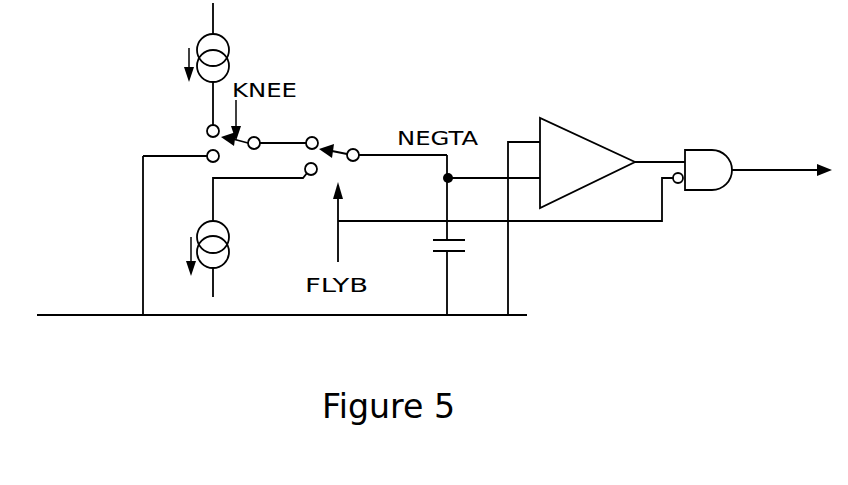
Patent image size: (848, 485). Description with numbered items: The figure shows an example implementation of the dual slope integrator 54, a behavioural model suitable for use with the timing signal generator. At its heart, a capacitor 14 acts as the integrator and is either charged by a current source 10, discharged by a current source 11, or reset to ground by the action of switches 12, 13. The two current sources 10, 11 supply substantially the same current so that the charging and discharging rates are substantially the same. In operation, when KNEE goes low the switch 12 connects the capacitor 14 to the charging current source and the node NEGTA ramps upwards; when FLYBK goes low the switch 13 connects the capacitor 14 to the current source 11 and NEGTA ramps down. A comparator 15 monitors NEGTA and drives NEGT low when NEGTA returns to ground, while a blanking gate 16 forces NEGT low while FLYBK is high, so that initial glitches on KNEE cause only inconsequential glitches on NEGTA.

The current source 10 is at (209, 69).
The current source 11 is at (217, 259).
The switch 12 is at (262, 151).
The switch 13 is at (383, 192).
The capacitor 14 is at (461, 277).
The comparator 15 is at (612, 165).
The blanking gate 16 is at (760, 175).
The dual slope integrator 54 is at (111, 366).